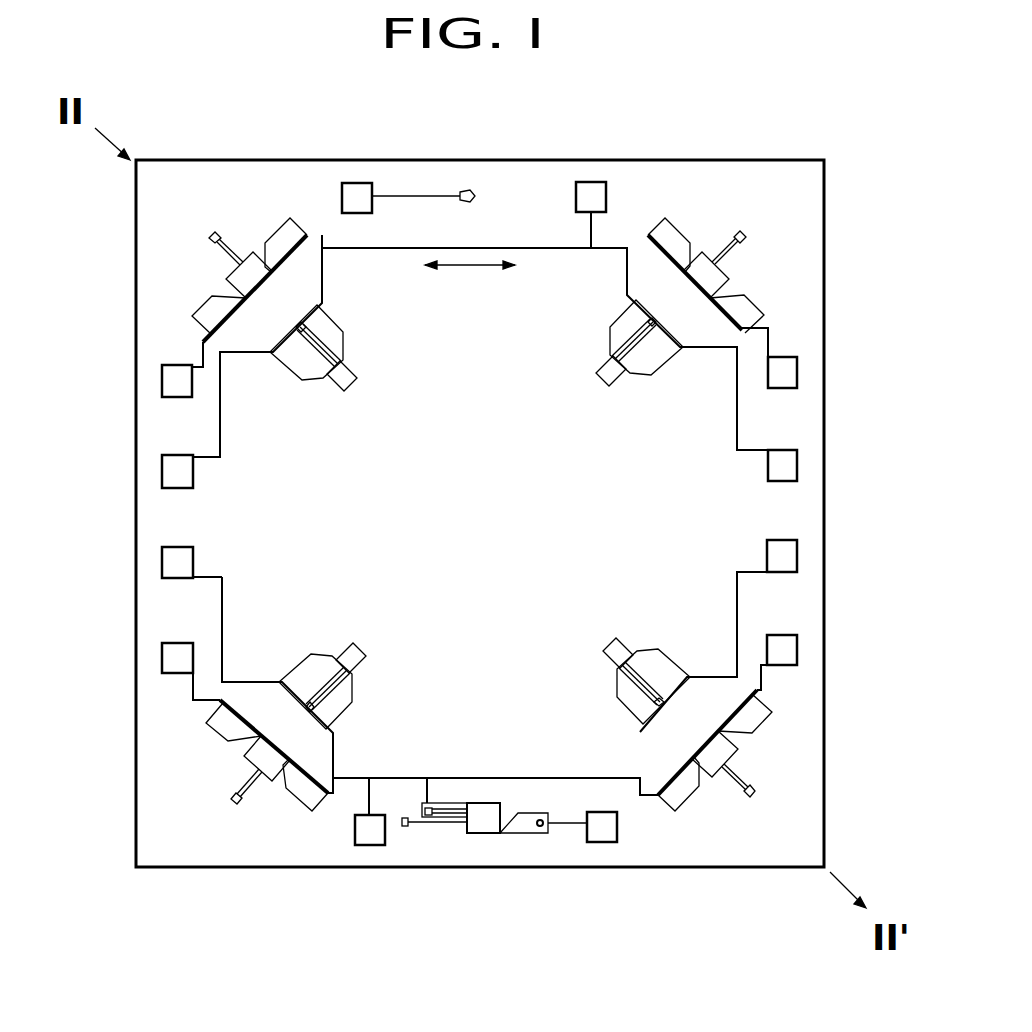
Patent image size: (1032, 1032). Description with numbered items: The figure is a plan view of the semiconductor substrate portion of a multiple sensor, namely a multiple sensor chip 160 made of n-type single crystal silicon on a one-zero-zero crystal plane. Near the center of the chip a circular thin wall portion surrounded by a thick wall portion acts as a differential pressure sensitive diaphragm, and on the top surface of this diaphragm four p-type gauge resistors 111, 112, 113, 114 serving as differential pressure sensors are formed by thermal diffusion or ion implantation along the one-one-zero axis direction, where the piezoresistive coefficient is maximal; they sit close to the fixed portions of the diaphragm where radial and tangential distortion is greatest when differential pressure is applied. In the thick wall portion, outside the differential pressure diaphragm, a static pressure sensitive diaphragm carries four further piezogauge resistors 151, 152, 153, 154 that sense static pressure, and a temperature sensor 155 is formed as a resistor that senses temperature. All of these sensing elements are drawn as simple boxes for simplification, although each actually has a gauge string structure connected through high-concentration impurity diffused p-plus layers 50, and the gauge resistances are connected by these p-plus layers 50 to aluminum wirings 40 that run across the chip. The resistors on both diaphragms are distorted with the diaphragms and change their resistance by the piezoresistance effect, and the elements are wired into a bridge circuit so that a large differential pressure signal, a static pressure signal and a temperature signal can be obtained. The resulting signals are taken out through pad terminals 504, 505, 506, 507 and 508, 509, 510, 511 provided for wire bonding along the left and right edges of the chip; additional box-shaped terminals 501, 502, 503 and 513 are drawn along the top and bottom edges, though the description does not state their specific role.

The aluminum wirings 40 is at (540, 247).
The p+ layer 50 is at (480, 514).
The differential pressure sensor resistor 111 is at (348, 390).
The differential pressure sensor resistor 112 is at (340, 655).
The differential pressure sensor resistor 113 is at (653, 622).
The differential pressure sensor resistor 114 is at (603, 377).
The static pressure sensor resistor 151 is at (712, 773).
The static pressure sensor resistor 152 is at (718, 262).
The static pressure sensor resistor 153 is at (228, 282).
The static pressure sensor resistor 154 is at (258, 780).
The temperature sensor 155 is at (480, 835).
The multiple sensor chip 160 is at (824, 212).
The control block 501 is at (363, 845).
The control block 502 is at (591, 182).
The control block 503 is at (602, 842).
The pad terminal 504 is at (162, 470).
The pad terminal 505 is at (162, 563).
The pad terminal 506 is at (797, 463).
The pad terminal 507 is at (797, 552).
The pad terminal 508 is at (797, 648).
The pad terminal 509 is at (797, 366).
The pad terminal 510 is at (162, 657).
The pad terminal 511 is at (162, 381).
The control block 513 is at (351, 183).